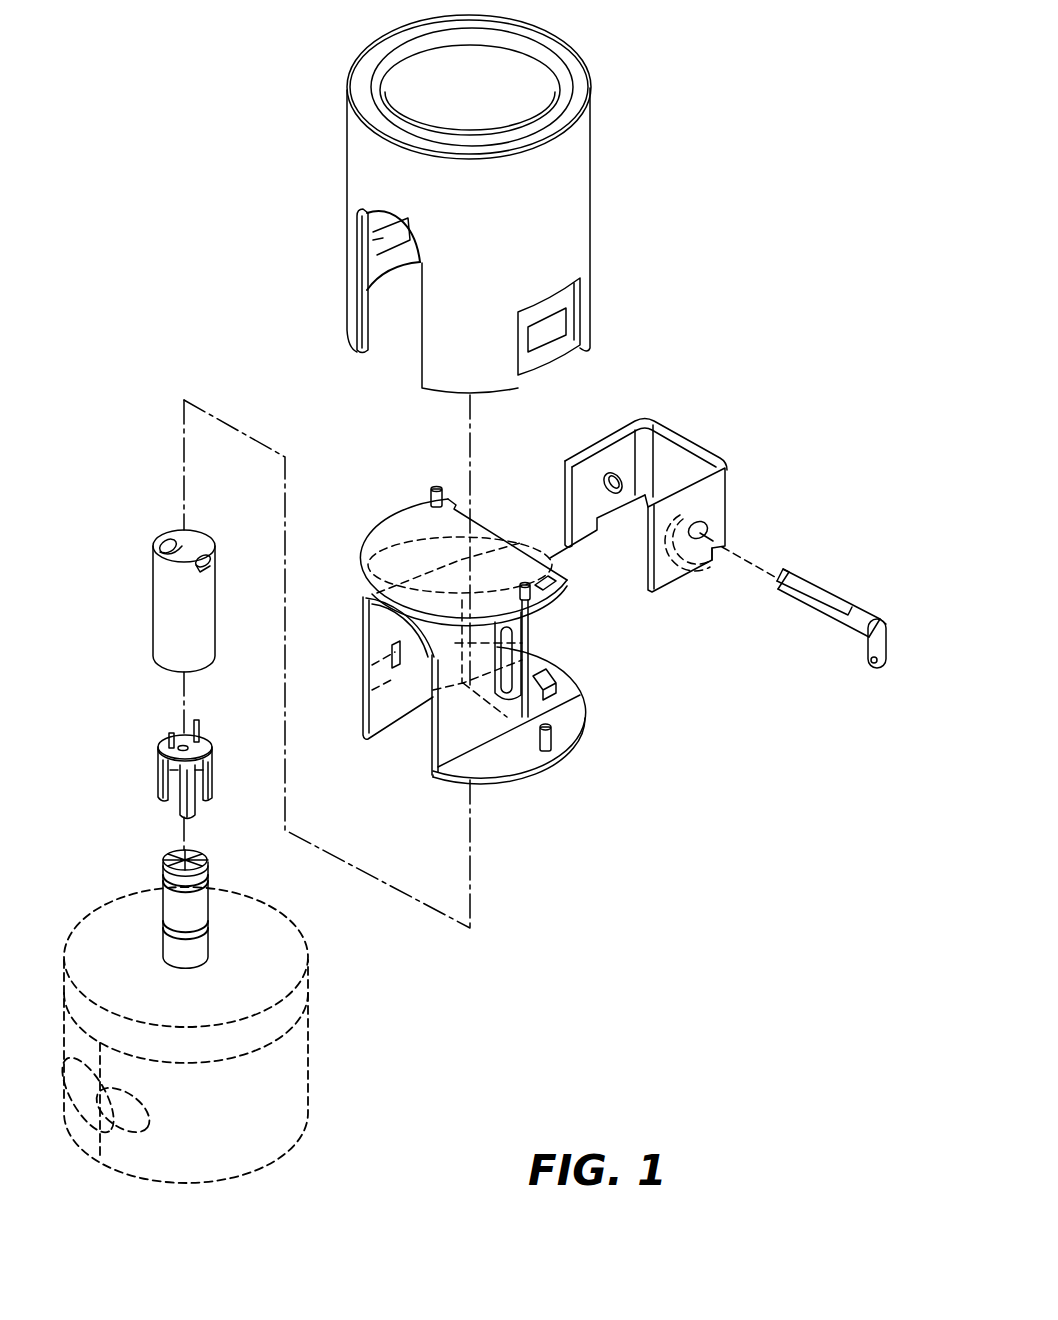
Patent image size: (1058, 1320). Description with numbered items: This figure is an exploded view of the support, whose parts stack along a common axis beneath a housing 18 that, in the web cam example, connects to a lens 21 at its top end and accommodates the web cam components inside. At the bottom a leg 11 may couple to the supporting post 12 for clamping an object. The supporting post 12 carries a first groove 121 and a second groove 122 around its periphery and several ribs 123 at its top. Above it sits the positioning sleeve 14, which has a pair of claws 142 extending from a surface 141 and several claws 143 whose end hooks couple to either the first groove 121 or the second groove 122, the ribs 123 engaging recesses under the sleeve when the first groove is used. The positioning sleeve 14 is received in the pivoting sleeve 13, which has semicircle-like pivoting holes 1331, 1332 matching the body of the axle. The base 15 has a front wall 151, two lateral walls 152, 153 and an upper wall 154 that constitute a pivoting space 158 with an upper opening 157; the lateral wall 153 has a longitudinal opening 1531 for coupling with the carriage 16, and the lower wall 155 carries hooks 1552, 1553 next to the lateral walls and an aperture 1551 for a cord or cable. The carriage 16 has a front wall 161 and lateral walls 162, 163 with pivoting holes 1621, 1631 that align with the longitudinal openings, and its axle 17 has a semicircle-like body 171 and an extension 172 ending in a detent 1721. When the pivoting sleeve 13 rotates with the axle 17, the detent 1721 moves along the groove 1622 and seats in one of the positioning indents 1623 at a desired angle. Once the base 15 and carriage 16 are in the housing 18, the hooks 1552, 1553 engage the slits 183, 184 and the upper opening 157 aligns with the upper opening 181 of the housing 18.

The leg 11 is at (283, 1018).
The supporting post 12 is at (222, 882).
The first groove 121 is at (212, 930).
The second groove 122 is at (208, 880).
The ribs 123 is at (175, 857).
The pivoting sleeve 13 is at (180, 578).
The pivoting hole 1331 is at (210, 570).
The pivoting hole 1332 is at (170, 540).
The positioning sleeve 14 is at (179, 767).
The surface 141 is at (200, 752).
The claws 142 is at (197, 727).
The claws 143 is at (208, 800).
The base 15 is at (489, 664).
The front wall 151 is at (558, 597).
The lateral wall 152 is at (533, 712).
The lateral wall 153 is at (386, 600).
The longitudinal opening 1531 is at (375, 553).
The upper wall 154 is at (459, 540).
The lower wall 155 is at (556, 699).
The aperture 1551 is at (548, 687).
The hook 1552 is at (565, 757).
The hook 1553 is at (390, 655).
The upper opening 157 is at (349, 643).
The pivoting space 158 is at (420, 693).
The carriage 16 is at (655, 496).
The front wall 161 is at (695, 450).
The lateral wall 162 is at (733, 555).
The pivoting hole 1621 is at (710, 530).
The groove 1622 is at (680, 575).
The positioning indents 1623 is at (705, 565).
The lateral wall 163 is at (609, 467).
The pivoting hole 1631 is at (598, 478).
The axle 17 is at (823, 620).
The semicircle-like body 171 is at (817, 592).
The extension 172 is at (880, 650).
The detent 1721 is at (868, 660).
The housing 18 is at (471, 204).
The upper opening 181 is at (398, 313).
The slit 183 is at (555, 325).
The slit 184 is at (382, 248).
The lens 21 is at (522, 82).